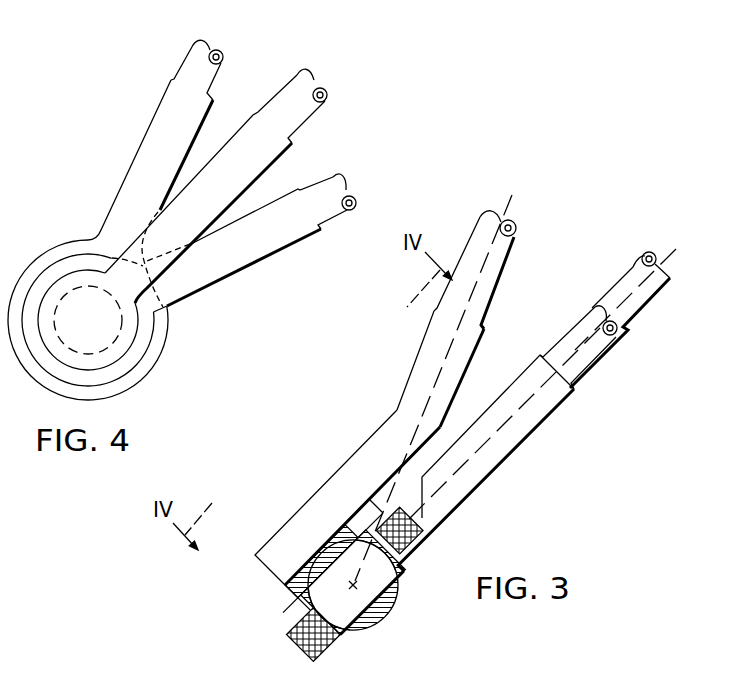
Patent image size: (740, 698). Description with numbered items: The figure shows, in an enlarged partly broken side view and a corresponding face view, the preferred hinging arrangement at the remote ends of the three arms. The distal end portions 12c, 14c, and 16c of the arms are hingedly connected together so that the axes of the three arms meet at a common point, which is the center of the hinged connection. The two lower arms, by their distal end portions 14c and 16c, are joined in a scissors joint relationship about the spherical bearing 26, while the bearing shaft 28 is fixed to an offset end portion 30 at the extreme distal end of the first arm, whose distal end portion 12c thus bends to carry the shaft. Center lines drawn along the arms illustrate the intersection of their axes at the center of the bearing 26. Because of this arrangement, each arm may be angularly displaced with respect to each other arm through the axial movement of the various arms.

In FIG. 4, the distal end portion 12c is at (296, 74).
In FIG. 3, the distal end portion 12c is at (385, 383).
In FIG. 4, the distal end portion 14c is at (333, 178).
In FIG. 3, the distal end portion 14c is at (582, 320).
In FIG. 4, the distal end portion 16c is at (192, 52).
In FIG. 3, the distal end portion 16c is at (635, 268).
In FIG. 3, the spherical bearing 26 is at (325, 587).
In FIG. 3, the bearing shaft 28 is at (362, 588).
In FIG. 3, the offset end portion 30 is at (388, 428).